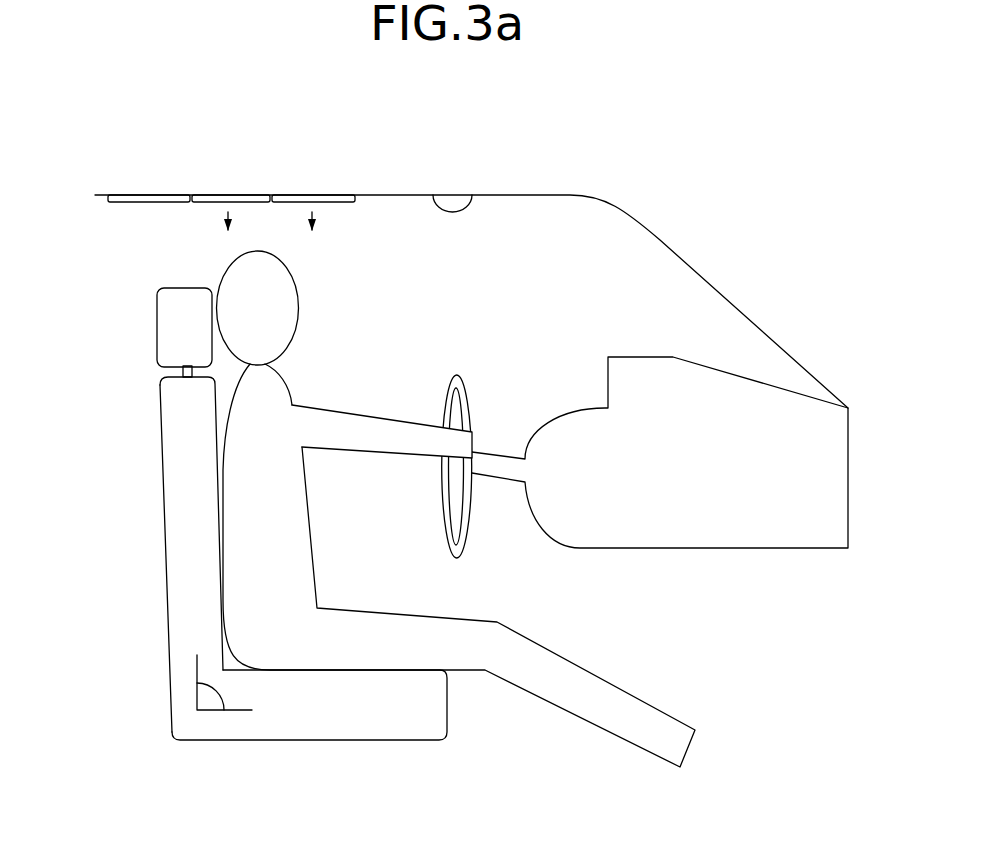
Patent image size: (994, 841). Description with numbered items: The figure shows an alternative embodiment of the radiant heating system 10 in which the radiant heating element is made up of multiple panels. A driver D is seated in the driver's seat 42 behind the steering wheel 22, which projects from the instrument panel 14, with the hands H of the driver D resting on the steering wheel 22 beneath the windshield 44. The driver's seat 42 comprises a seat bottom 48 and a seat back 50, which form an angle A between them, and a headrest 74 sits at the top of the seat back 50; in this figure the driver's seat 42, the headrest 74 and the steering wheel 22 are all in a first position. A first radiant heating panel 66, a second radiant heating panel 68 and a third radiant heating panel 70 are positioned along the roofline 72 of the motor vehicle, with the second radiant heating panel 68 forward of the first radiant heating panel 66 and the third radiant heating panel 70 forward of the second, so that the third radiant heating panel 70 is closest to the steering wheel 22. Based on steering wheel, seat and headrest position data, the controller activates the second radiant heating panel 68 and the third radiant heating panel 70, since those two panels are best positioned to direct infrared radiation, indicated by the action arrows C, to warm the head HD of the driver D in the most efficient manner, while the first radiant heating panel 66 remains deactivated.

The radiant heating system 10 is at (183, 132).
The instrument panel 14 is at (677, 518).
The steering wheel 22 is at (445, 520).
The driver's seat 42 is at (233, 593).
The windshield 44 is at (702, 277).
The seat bottom 48 is at (323, 722).
The seat back 50 is at (187, 590).
The first radiant heating panel 66 is at (140, 195).
The second radiant heating panel 68 is at (233, 195).
The third radiant heating panel 70 is at (317, 195).
The roofline 72 is at (475, 195).
The headrest 74 is at (172, 323).
The action arrows C is at (312, 222).
The head of the driver HD is at (285, 295).
The driver D is at (280, 405).
The hands of the driver H is at (463, 442).
The angle A is at (215, 692).